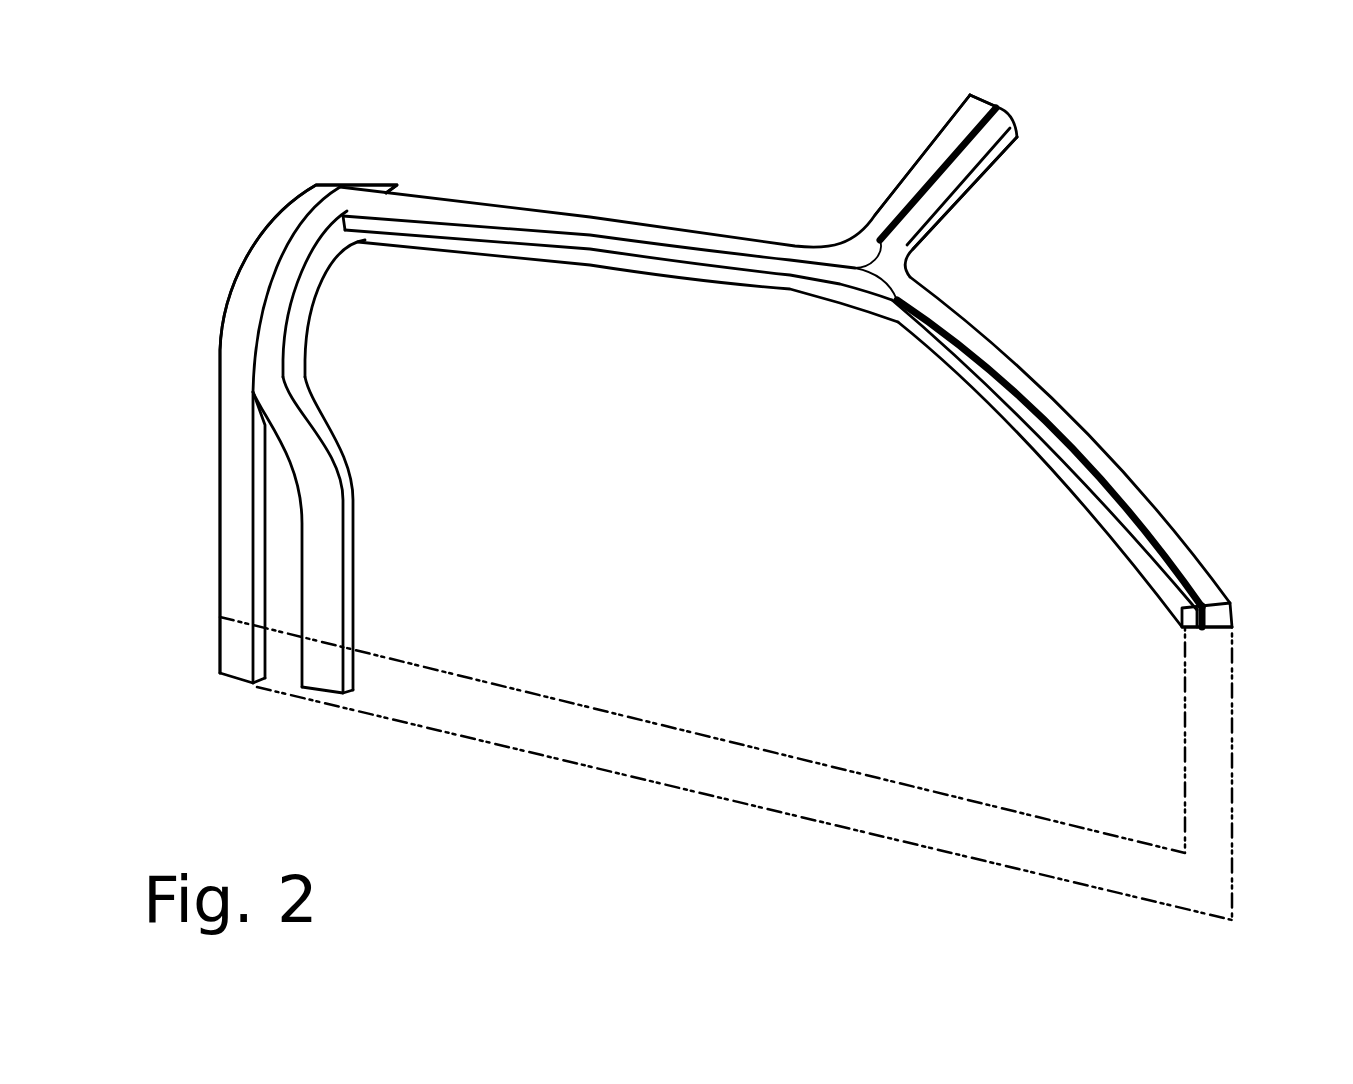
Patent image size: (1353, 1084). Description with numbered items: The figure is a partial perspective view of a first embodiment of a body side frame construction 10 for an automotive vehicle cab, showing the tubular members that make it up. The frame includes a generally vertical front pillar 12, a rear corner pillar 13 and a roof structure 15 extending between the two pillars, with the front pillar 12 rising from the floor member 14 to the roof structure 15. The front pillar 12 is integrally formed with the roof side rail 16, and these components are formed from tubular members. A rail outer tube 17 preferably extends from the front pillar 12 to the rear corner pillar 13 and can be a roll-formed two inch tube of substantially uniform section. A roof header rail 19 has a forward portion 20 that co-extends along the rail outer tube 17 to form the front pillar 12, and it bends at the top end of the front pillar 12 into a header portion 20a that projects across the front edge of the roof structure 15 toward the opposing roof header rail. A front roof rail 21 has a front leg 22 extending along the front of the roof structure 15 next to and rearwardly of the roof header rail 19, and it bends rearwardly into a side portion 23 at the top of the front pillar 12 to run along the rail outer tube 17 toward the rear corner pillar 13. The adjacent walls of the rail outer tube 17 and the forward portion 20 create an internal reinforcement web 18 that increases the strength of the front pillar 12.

The body side frame construction 10 is at (249, 171).
The front pillar 12 is at (1188, 565).
The rear corner pillar 13 is at (232, 521).
The floor member 14 is at (755, 745).
The roof structure 15 is at (1078, 186).
The roof side rail 16 is at (587, 266).
The rail outer tube 17 is at (861, 307).
The internal reinforcement web 18 is at (1213, 618).
The roof header rail 19 is at (932, 307).
The forward portion 20 is at (1040, 394).
The header portion 20a is at (958, 198).
The front roof rail 21 is at (893, 197).
The front leg 22 is at (933, 137).
The side portion 23 is at (604, 233).